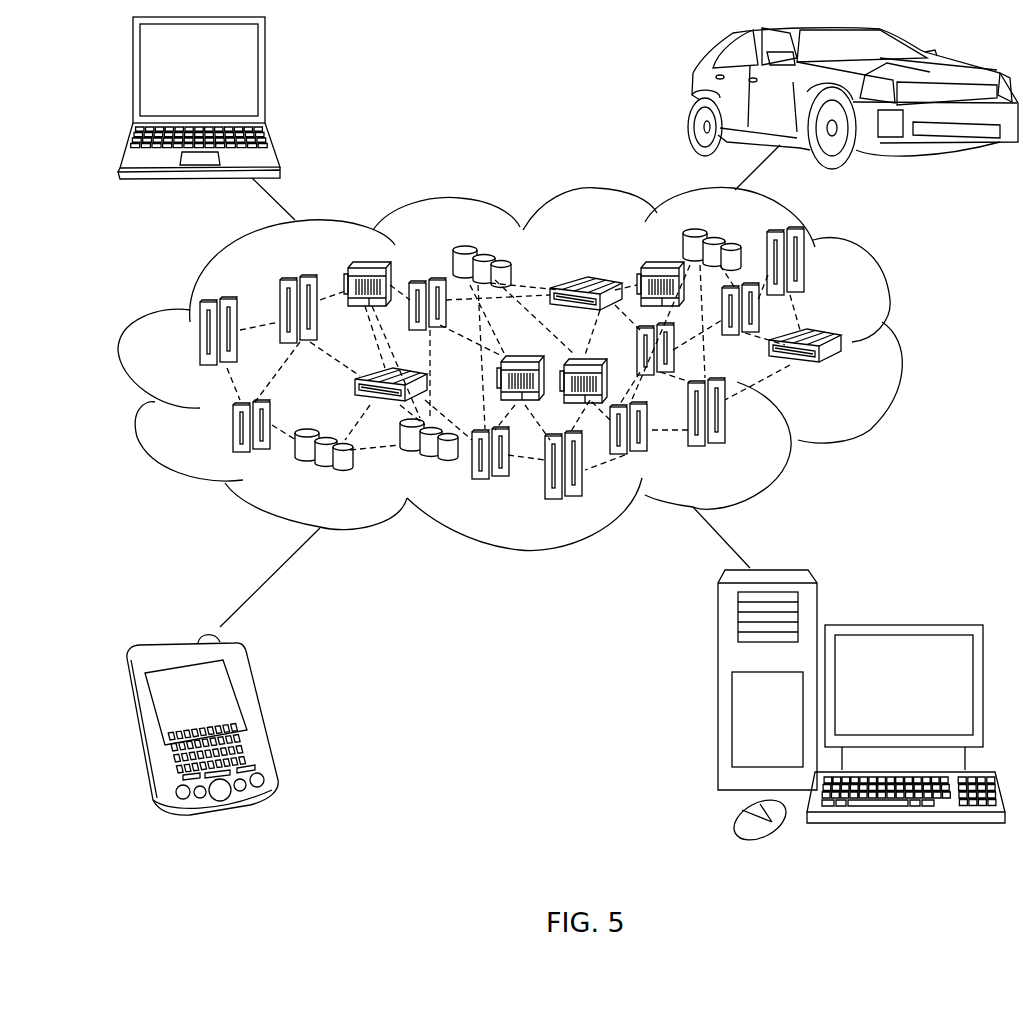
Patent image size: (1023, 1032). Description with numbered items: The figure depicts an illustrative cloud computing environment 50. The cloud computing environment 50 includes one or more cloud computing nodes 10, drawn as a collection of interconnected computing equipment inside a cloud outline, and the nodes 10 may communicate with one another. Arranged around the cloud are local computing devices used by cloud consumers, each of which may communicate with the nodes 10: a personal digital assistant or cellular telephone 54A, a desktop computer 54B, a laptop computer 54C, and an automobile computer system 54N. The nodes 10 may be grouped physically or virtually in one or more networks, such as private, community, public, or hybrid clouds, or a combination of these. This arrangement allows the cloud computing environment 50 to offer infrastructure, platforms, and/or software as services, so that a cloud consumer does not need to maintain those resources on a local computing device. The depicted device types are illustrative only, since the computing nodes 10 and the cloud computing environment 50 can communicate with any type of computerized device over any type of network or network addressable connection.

The cloud computing nodes 10 is at (847, 377).
The cloud computing environment 50 is at (900, 345).
The personal digital assistant (PDA) or cellular telephone 54A is at (257, 713).
The desktop computer 54B is at (900, 624).
The laptop computer 54C is at (265, 78).
The automobile computer system 54N is at (690, 95).